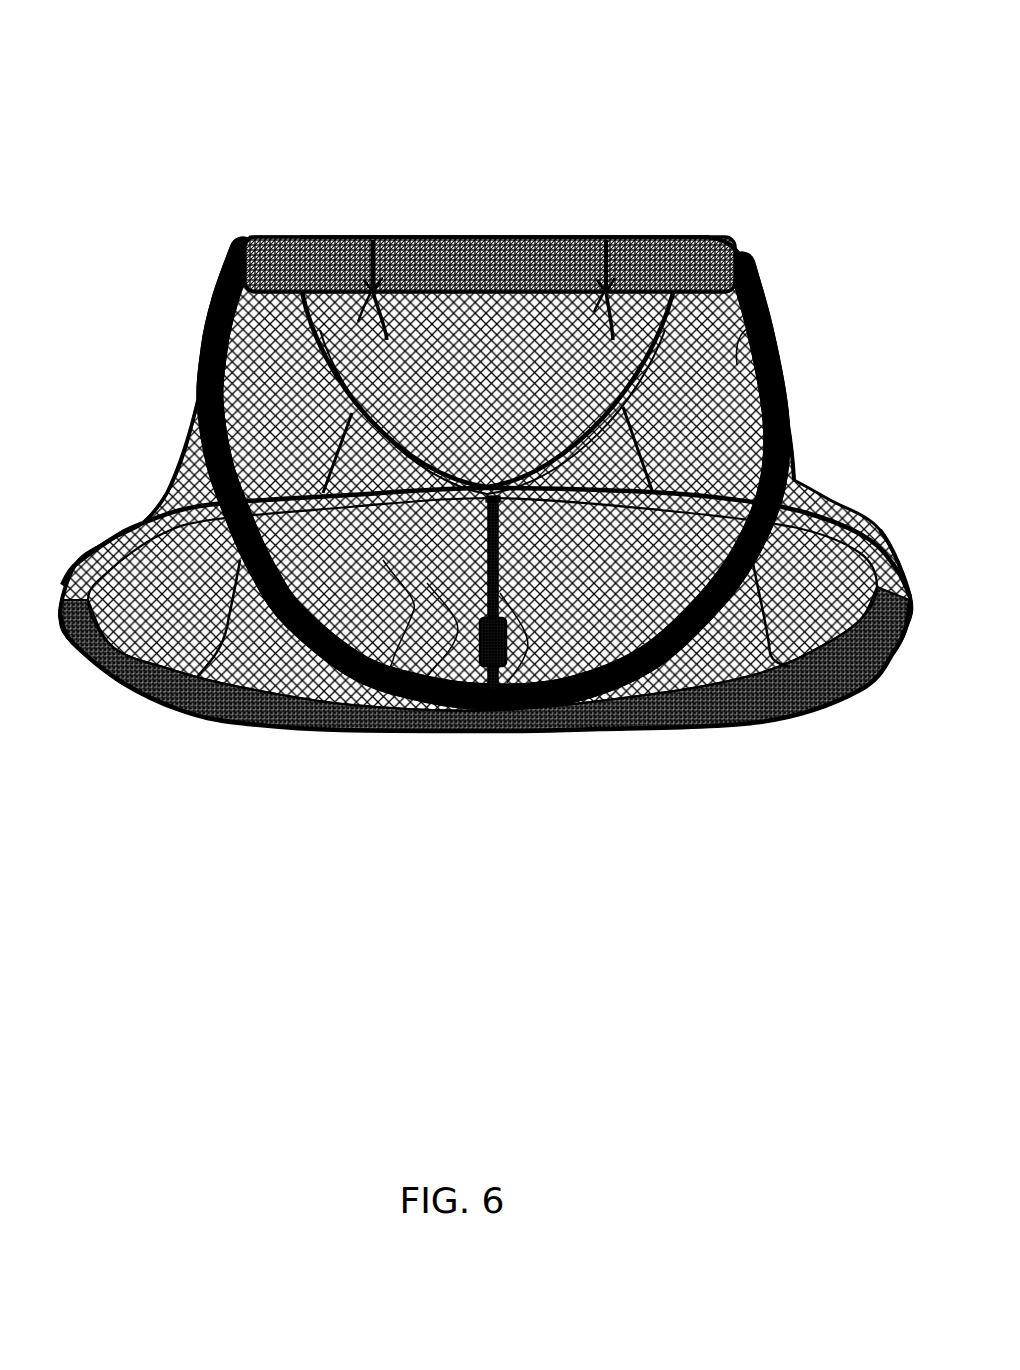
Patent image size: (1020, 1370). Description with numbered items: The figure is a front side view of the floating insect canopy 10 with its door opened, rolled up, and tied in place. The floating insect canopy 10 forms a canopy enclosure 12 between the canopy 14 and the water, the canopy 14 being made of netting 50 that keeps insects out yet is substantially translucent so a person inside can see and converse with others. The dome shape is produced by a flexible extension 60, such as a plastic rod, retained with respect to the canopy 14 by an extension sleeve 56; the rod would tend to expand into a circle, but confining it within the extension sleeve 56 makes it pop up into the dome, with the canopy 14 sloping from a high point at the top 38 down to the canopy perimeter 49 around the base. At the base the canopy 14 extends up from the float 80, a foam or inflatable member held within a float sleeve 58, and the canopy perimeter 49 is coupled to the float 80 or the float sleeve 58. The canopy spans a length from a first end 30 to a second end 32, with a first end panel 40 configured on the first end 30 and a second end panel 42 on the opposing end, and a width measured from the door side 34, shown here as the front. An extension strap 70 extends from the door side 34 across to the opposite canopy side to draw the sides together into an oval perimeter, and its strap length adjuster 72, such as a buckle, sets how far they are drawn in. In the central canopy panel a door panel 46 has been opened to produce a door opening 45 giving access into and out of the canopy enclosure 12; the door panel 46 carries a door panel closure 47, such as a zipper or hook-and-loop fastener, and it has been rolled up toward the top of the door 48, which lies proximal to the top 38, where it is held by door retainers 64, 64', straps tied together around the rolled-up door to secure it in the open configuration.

The floating insect canopy 10 is at (262, 110).
The canopy enclosure 12 is at (752, 326).
The canopy 14 is at (485, 325).
The first end 30 is at (912, 607).
The second end 32 is at (60, 600).
The door side 34 is at (382, 690).
The top 38 is at (697, 237).
The first end panel 40 is at (800, 468).
The second end panel 42 is at (153, 505).
The door opening 45 is at (423, 690).
The door panel 46 is at (525, 265).
The door panel closure 47 is at (723, 243).
The top of the door 48 is at (430, 247).
The canopy perimeter 49 is at (277, 697).
The netting 50 is at (283, 237).
The extension sleeve 56 is at (237, 249).
The float sleeve 58 is at (720, 703).
The flexible extension 60 is at (215, 262).
The door retainer 64 is at (346, 226).
The door retainer 64' is at (574, 226).
The extension strap 70 is at (500, 700).
The strap length adjuster 72 is at (478, 690).
The float 80 is at (797, 703).